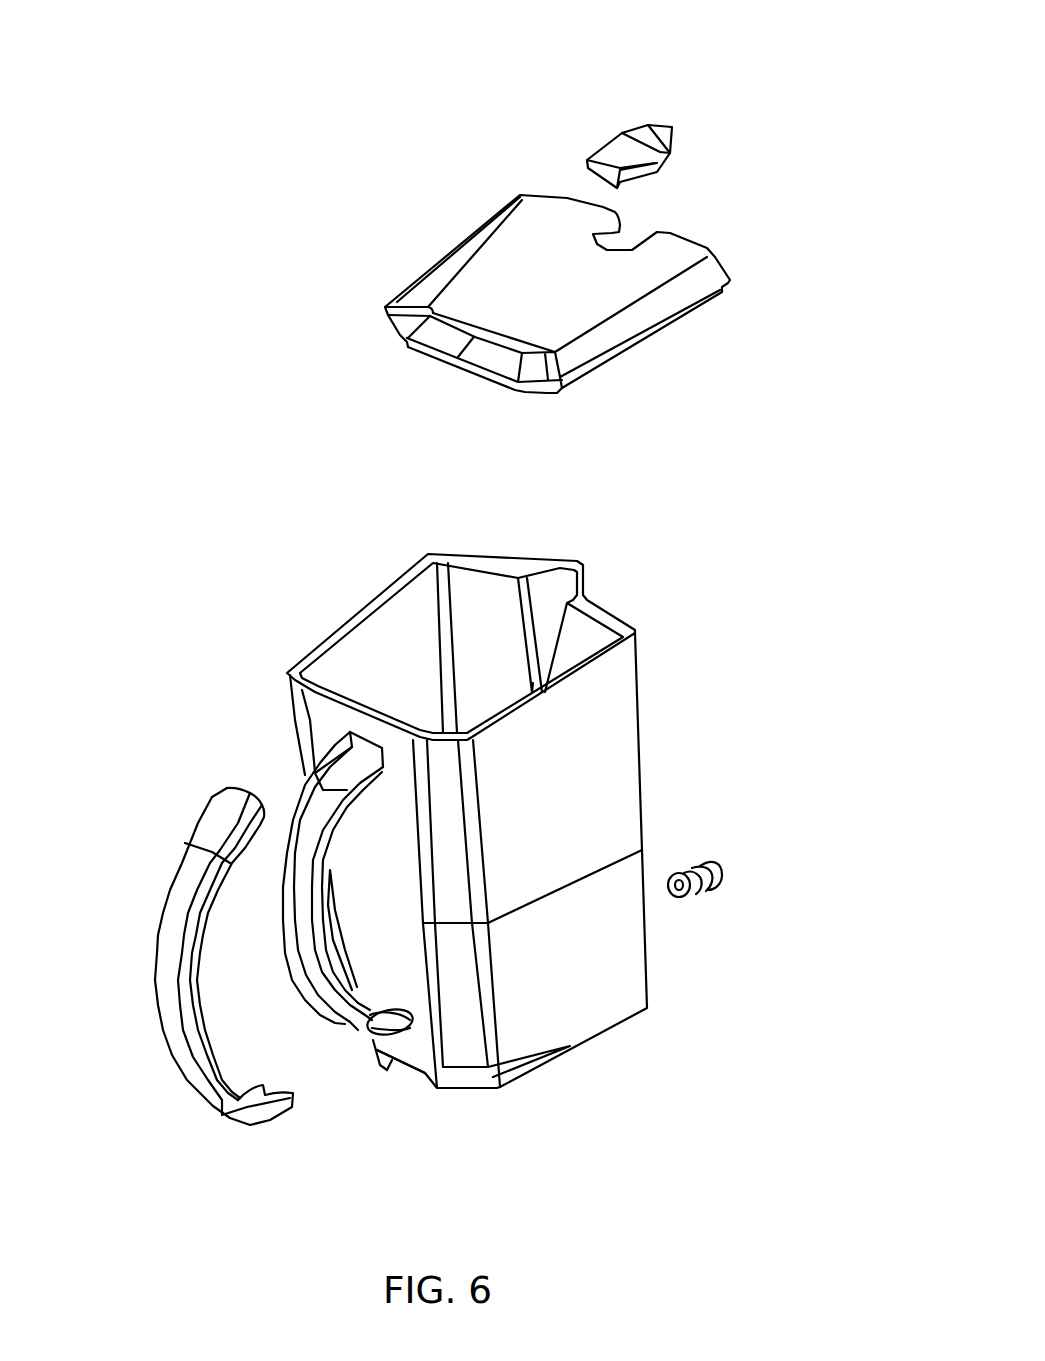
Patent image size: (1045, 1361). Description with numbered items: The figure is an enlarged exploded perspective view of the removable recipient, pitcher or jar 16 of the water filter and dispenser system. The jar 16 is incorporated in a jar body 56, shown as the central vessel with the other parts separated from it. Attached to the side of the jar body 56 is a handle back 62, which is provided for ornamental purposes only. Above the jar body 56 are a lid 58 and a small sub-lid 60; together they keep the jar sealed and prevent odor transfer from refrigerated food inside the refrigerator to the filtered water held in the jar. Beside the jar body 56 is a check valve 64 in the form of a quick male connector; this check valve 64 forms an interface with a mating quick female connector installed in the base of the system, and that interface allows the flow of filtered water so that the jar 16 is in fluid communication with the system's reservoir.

The jar 16 is at (792, 100).
The jar body 56 is at (372, 623).
The lid 58 is at (507, 275).
The sub-lid 60 is at (615, 163).
The handle back 62 is at (190, 875).
The check valve 64 is at (707, 853).